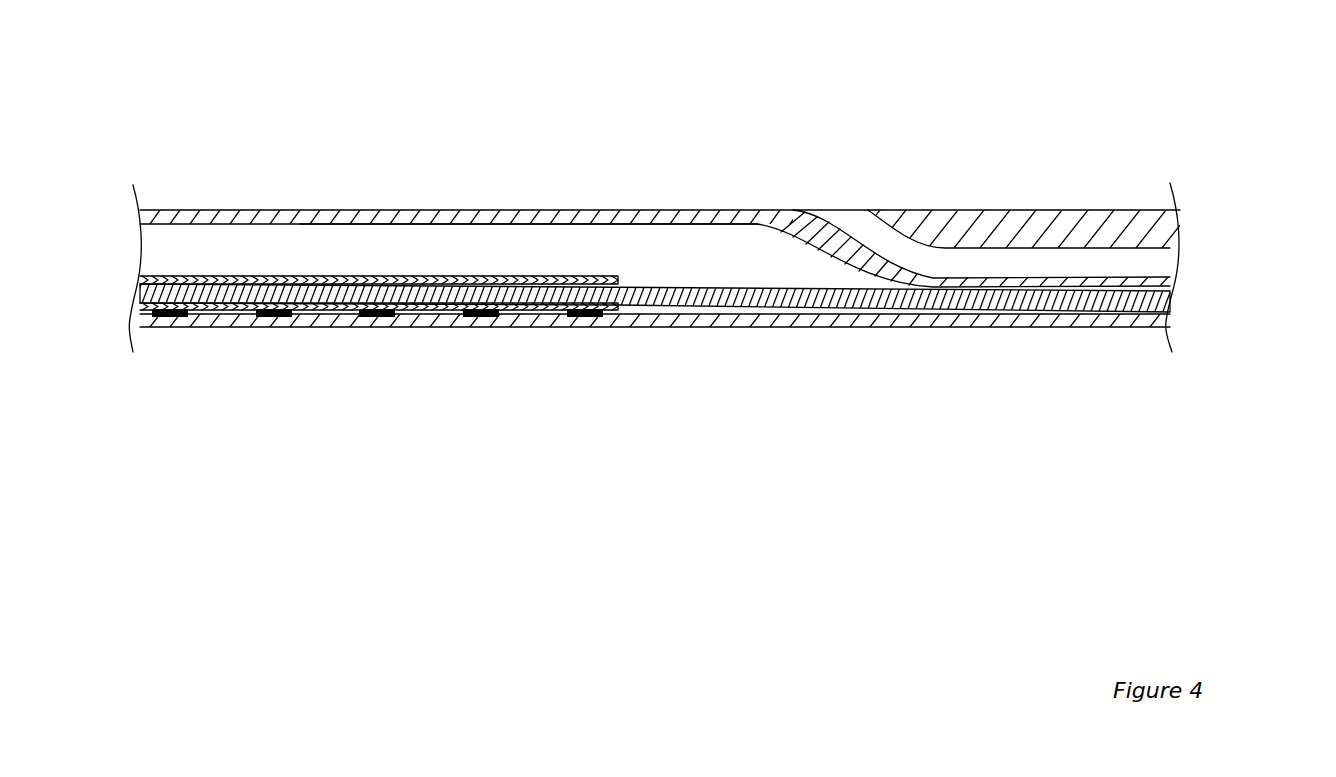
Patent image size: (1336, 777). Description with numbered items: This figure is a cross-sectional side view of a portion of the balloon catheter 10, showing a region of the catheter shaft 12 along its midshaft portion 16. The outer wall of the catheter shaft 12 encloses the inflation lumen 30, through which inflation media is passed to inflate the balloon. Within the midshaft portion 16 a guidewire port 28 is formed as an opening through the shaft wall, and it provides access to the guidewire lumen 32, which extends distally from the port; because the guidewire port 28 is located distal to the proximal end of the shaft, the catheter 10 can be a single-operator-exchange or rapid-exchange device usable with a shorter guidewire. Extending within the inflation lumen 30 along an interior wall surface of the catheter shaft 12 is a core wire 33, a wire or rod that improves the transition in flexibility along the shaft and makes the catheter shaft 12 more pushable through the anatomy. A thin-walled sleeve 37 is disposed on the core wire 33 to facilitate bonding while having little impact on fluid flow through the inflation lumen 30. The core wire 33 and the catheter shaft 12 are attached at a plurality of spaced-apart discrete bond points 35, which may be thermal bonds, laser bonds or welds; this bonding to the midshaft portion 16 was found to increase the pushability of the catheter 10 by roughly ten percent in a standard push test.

The catheter 10 is at (987, 104).
The catheter shaft 12 is at (488, 209).
The midshaft portion 16 is at (453, 322).
The guidewire port 28 is at (833, 218).
The inflation lumen 30 is at (685, 243).
The guidewire lumen 32 is at (1080, 258).
The core wire 33 is at (750, 298).
The discrete bond points 35 is at (275, 322).
The sleeve 37 is at (312, 280).